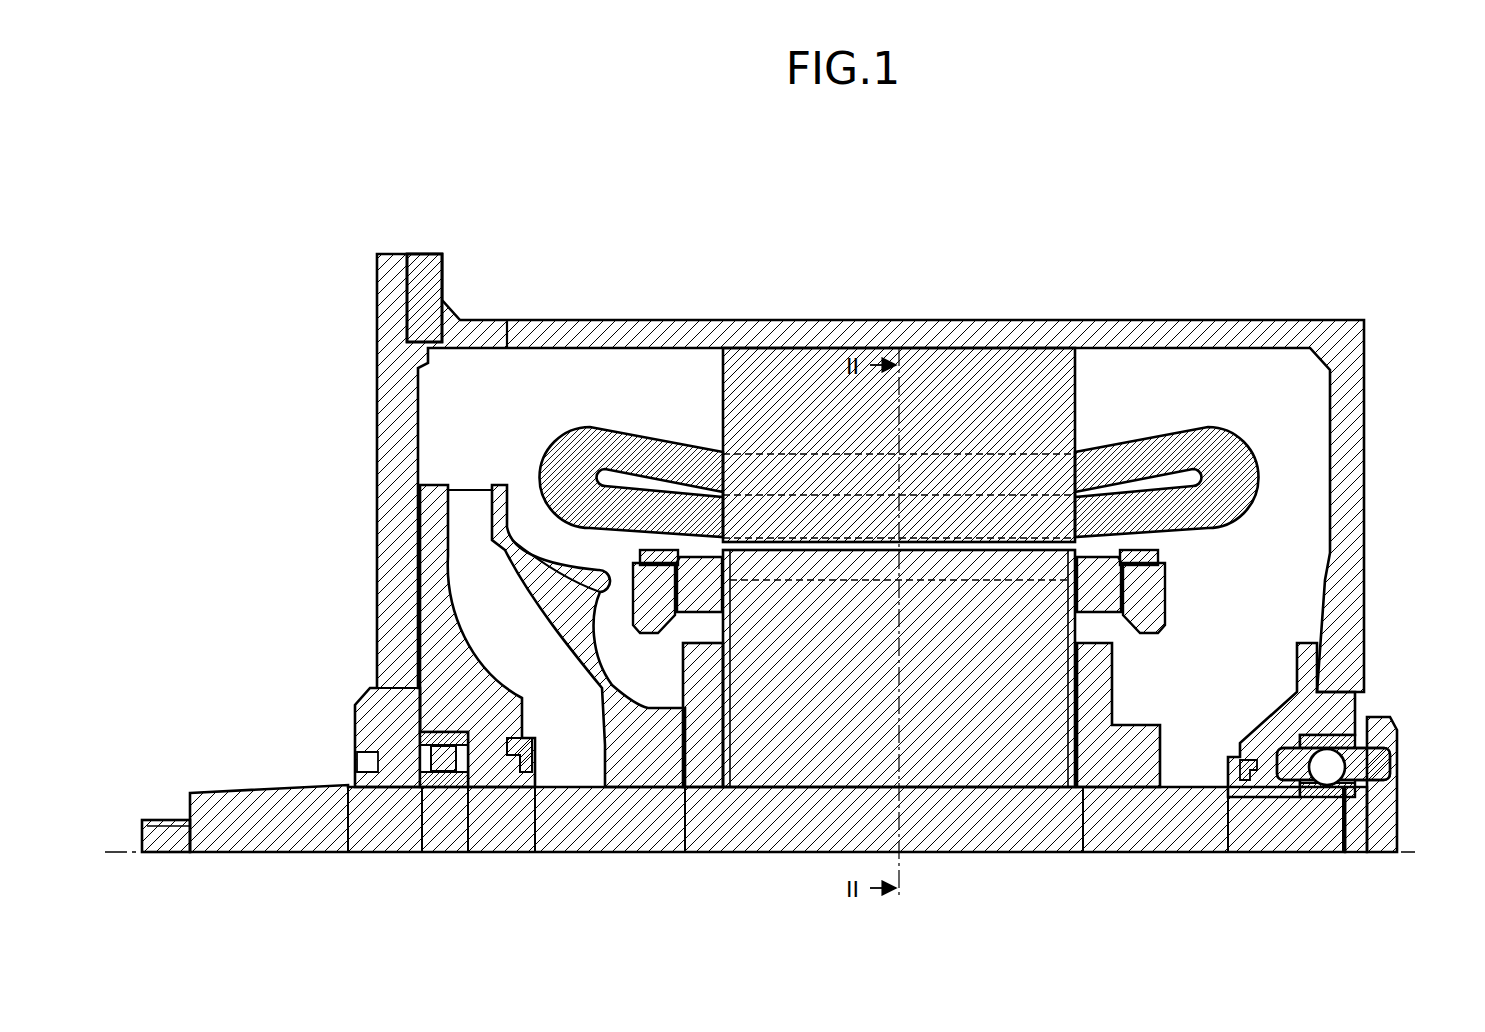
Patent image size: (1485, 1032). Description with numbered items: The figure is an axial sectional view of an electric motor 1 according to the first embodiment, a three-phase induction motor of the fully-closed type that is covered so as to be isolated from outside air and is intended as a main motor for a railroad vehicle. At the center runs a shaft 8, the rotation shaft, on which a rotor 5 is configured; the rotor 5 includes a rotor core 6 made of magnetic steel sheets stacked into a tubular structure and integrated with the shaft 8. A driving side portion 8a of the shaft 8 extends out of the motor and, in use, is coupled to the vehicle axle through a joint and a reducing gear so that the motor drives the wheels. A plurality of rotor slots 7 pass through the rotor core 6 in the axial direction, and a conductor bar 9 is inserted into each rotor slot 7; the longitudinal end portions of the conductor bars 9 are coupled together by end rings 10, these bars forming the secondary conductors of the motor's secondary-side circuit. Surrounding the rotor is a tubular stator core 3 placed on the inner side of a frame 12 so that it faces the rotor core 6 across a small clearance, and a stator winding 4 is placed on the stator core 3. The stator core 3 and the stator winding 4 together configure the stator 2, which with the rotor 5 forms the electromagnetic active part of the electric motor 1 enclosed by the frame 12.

The electric motor 1 is at (729, 180).
The stator 2 is at (899, 379).
The stator core 3 is at (800, 362).
The stator winding 4 is at (627, 430).
The rotor 5 is at (712, 627).
The rotor core 6 is at (790, 770).
The rotor slot 7 is at (1122, 618).
The shaft 8 is at (754, 845).
The driving side portion 8a is at (268, 838).
The conductor bar 9 is at (1105, 580).
The end ring 10 is at (1145, 600).
The frame 12 is at (1025, 336).